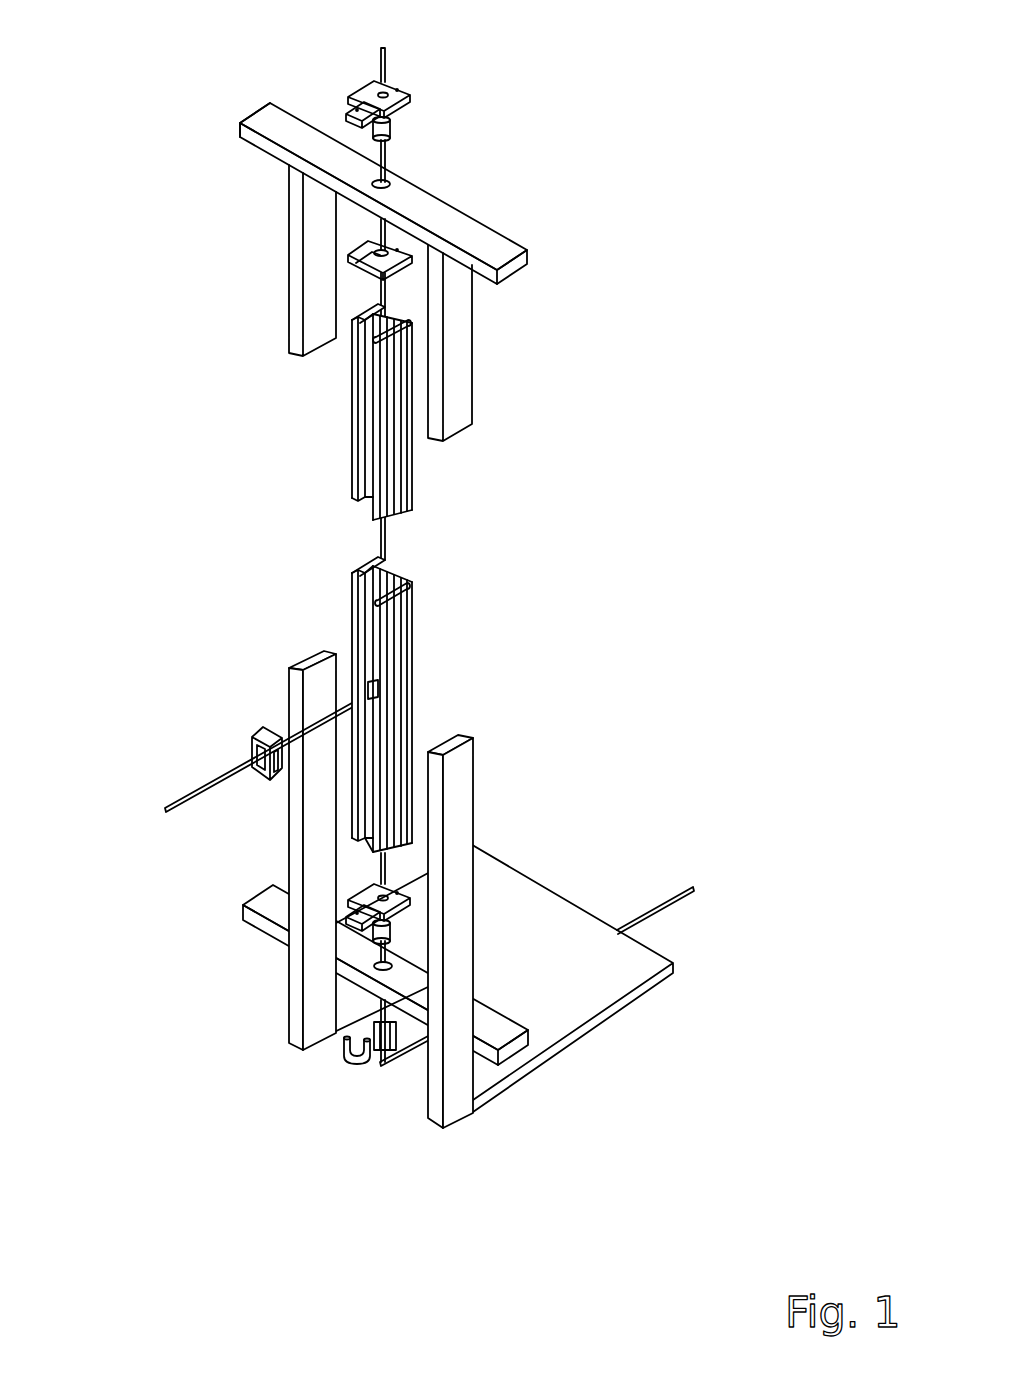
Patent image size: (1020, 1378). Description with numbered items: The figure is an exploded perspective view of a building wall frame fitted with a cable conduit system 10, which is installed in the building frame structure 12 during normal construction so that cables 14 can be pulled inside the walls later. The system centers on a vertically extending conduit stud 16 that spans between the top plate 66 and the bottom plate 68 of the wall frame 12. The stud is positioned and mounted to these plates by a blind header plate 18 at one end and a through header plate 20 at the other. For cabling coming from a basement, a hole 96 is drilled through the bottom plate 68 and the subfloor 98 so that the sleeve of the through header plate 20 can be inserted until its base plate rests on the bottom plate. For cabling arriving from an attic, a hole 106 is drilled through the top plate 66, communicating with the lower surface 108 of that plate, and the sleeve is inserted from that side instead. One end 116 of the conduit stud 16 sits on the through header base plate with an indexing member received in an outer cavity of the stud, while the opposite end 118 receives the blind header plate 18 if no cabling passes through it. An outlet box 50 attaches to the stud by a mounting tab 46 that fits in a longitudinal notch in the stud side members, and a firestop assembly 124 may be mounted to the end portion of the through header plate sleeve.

The cable conduit system 10 is at (702, 388).
The building frame structure 12 is at (480, 222).
The cables 14 is at (384, 60).
The conduit stud 16 is at (414, 621).
The blind header plate 18 is at (347, 257).
The through header plate 20 is at (402, 893).
The mounting tab 46 is at (283, 773).
The outlet box 50 is at (254, 737).
The top plate 66 is at (253, 115).
The bottom plate 68 is at (497, 1015).
The hole 96 is at (370, 962).
The subfloor 98 is at (565, 920).
The hole 106 is at (392, 183).
The lower surface 108 is at (514, 293).
The end of conduit stud 116 is at (415, 848).
The opposite end of conduit stud 118 is at (412, 320).
The firestop assembly 124 is at (355, 1090).